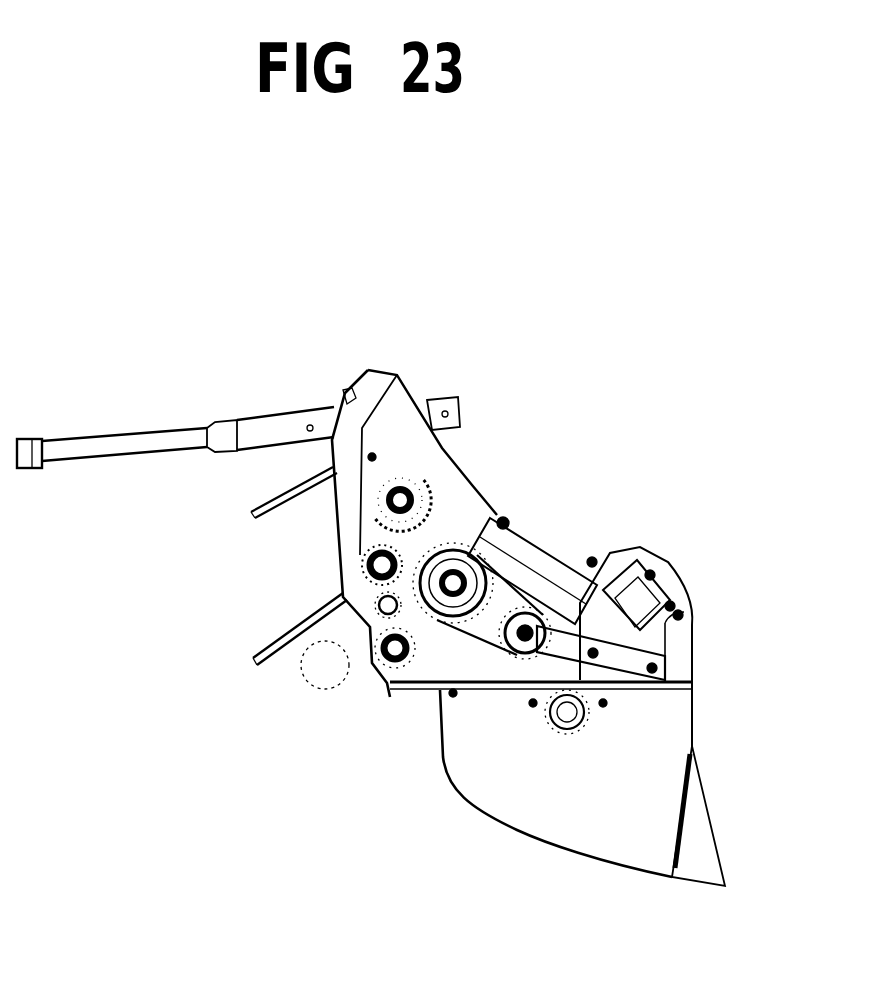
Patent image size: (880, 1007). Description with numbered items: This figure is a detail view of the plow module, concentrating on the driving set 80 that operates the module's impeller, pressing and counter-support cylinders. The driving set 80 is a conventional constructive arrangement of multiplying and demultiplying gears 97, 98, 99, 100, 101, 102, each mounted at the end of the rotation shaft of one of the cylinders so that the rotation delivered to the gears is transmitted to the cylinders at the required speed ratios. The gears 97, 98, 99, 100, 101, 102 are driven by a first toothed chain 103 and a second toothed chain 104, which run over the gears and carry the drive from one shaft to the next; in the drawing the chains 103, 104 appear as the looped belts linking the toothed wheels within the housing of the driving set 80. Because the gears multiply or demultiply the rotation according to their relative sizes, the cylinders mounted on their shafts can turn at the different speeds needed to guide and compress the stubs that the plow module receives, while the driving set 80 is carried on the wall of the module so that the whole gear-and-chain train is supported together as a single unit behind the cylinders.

The driving set 80 is at (310, 678).
The multiplying and demultiplying gear 97 is at (548, 590).
The multiplying and demultiplying gear 98 is at (512, 520).
The multiplying and demultiplying gear 99 is at (410, 472).
The multiplying and demultiplying gear 100 is at (372, 560).
The multiplying and demultiplying gear 101 is at (320, 657).
The multiplying and demultiplying gear 102 is at (387, 690).
The first toothed chain 103 is at (557, 540).
The second toothed chain 104 is at (497, 515).